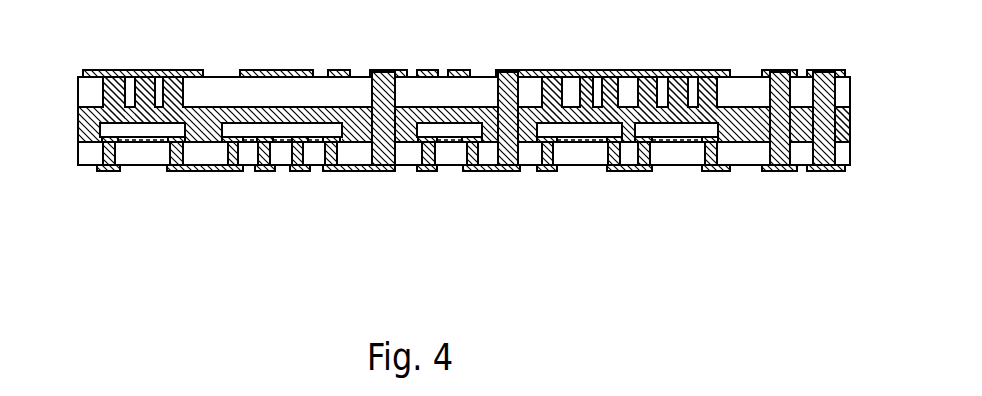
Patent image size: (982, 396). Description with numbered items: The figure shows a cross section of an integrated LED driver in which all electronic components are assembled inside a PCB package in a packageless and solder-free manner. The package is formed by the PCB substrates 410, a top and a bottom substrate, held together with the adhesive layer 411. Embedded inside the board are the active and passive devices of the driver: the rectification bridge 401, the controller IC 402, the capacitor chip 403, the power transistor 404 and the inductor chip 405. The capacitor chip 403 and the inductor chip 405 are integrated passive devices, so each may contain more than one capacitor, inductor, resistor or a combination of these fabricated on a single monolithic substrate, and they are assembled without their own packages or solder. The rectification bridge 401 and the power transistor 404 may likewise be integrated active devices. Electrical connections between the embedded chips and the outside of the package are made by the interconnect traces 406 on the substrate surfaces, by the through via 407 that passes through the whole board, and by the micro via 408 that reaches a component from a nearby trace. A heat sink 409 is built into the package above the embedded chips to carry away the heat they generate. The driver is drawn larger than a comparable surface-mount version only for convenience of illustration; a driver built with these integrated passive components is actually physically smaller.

The rectification bridge 401 is at (157, 130).
The controller IC 402 is at (287, 127).
The capacitor chip 403 is at (445, 128).
The power transistor 404 is at (682, 130).
The inductor chip 405 is at (570, 132).
The interconnect traces 406 is at (300, 72).
The through via 407 is at (825, 95).
The micro via 408 is at (425, 138).
The heat sink 409 is at (658, 95).
The PCB substrates 410 is at (93, 98).
The adhesive layer 411 is at (842, 137).